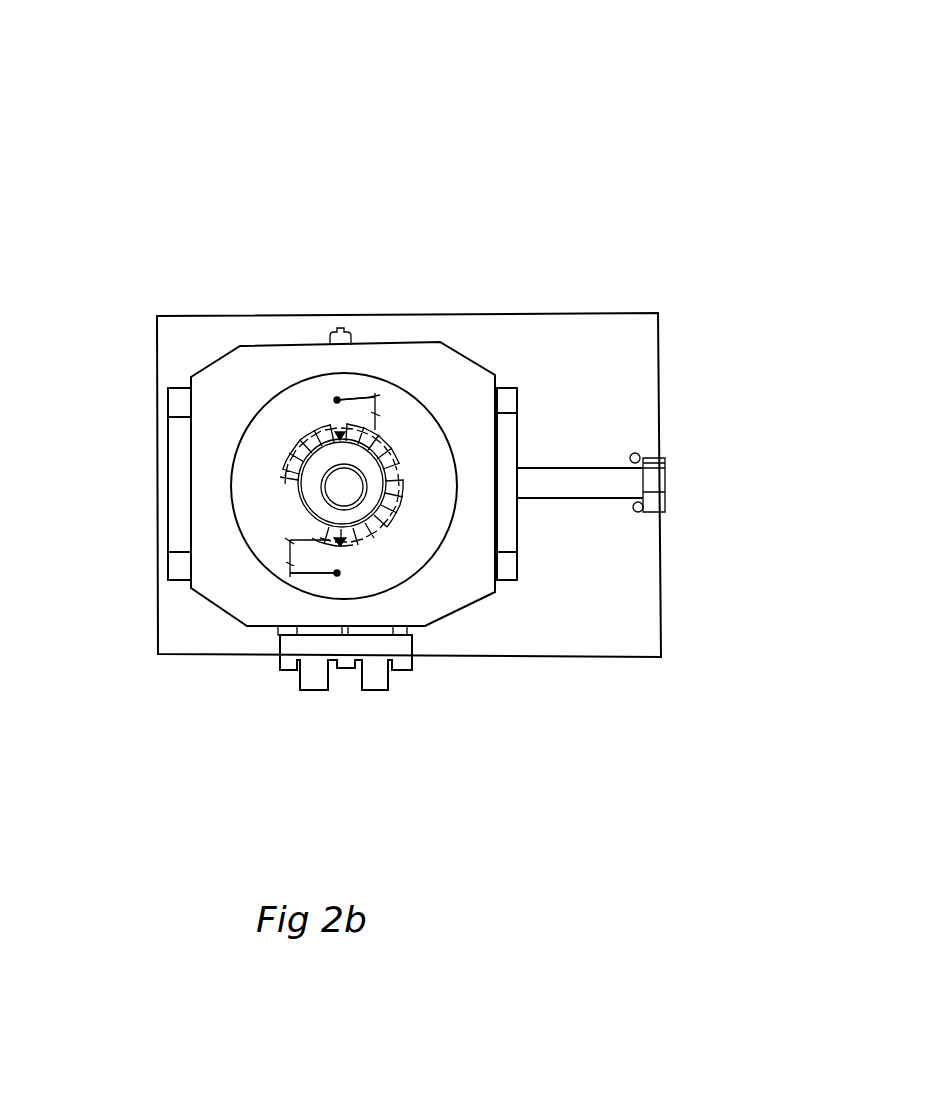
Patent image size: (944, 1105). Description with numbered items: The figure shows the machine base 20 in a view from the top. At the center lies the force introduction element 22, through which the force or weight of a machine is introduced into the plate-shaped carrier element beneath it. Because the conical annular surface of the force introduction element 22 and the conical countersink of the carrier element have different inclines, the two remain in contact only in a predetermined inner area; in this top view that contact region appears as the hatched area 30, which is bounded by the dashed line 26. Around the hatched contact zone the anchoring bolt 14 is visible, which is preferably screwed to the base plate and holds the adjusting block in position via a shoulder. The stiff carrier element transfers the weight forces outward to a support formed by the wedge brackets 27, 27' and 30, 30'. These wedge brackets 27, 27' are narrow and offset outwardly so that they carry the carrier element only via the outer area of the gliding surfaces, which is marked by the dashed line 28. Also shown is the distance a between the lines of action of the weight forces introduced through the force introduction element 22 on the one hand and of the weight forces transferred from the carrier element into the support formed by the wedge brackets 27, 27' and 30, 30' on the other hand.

The machine base 20 is at (675, 104).
The force introduction element 22 is at (285, 422).
The anchoring bolt 14 is at (340, 492).
The dashed line 26 is at (340, 430).
The dashed line 28 is at (337, 399).
The wedge bracket 27' is at (585, 390).
The wedge bracket 27 is at (571, 642).
The wedge bracket 30' is at (110, 447).
The hatched area 30 is at (422, 472).
The distance a is at (377, 412).